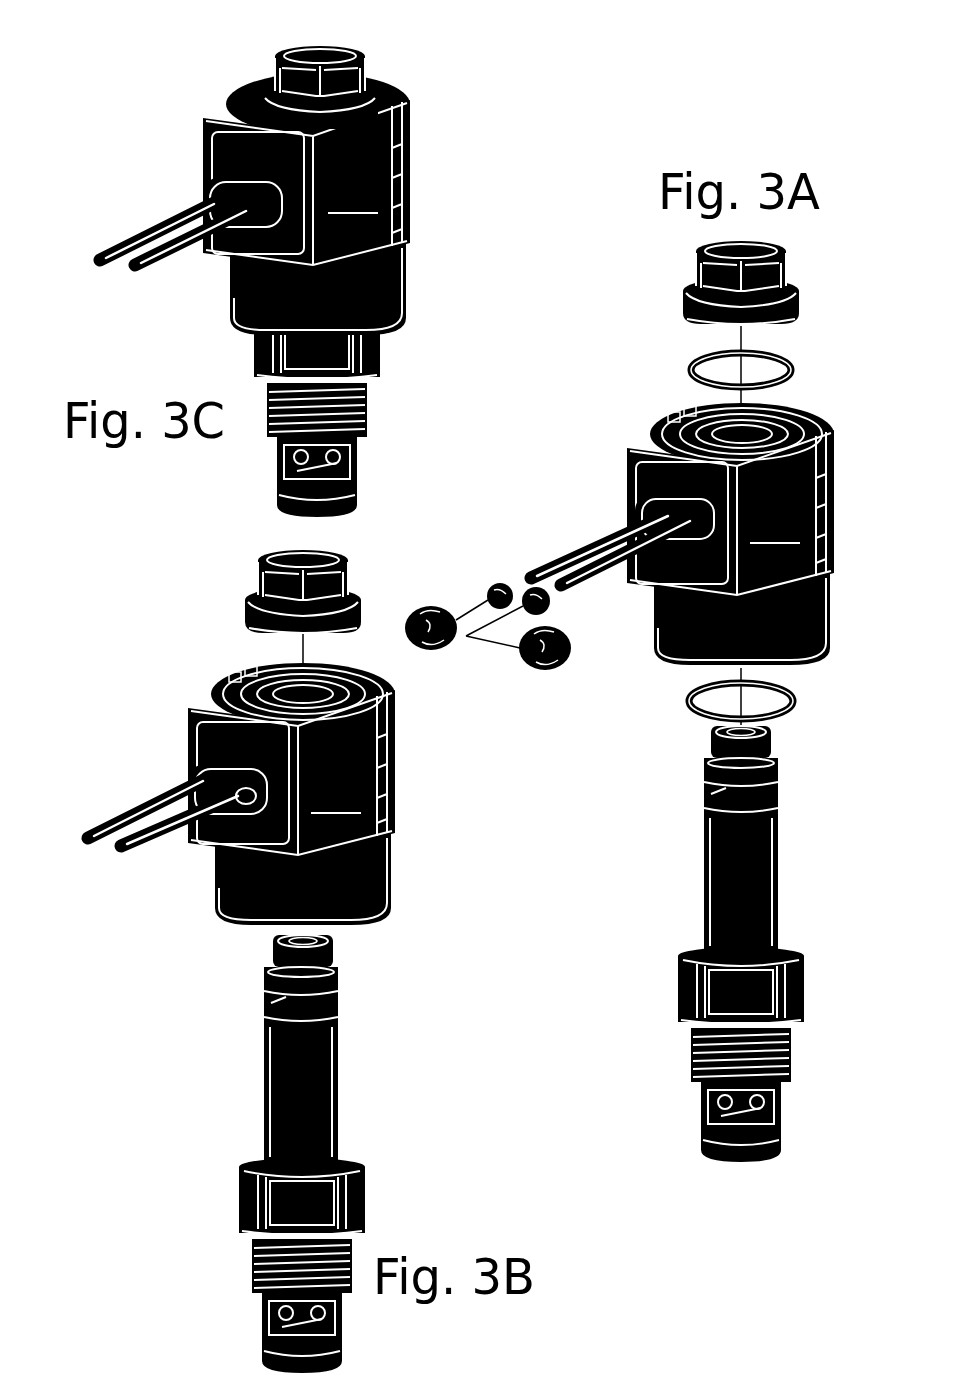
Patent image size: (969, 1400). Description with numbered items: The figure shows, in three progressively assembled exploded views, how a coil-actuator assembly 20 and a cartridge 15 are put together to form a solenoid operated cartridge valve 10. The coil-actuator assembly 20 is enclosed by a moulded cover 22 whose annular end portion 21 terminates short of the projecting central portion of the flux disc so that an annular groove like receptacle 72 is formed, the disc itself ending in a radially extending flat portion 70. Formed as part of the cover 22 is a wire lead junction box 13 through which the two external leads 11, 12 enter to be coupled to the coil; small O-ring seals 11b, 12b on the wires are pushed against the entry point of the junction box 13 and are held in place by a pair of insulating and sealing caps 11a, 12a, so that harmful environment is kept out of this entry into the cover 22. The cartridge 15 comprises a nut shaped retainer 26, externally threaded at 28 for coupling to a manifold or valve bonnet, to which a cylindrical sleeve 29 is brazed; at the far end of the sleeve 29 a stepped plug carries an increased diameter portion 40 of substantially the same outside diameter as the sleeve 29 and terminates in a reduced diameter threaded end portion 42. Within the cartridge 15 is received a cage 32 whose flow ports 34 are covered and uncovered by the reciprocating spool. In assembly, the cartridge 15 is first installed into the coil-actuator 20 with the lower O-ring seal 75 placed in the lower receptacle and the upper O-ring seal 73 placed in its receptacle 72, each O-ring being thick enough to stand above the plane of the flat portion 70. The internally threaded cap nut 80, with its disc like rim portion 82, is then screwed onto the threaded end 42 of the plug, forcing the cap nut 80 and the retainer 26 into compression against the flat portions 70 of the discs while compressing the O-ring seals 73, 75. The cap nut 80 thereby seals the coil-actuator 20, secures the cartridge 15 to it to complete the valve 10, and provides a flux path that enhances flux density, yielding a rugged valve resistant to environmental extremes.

In FIG. 3C, the solenoid operated cartridge valve 10 is at (370, 40).
In FIG. 3C, the external lead 11 is at (166, 262).
In FIG. 3B, the external lead 11 is at (142, 850).
In FIG. 3A, the external lead 11 is at (618, 572).
In FIG. 3B, the insulating and sealing cap 11a is at (243, 790).
In FIG. 3A, the insulating and sealing cap 11a is at (540, 665).
In FIG. 3A, the small O-ring seal 11b is at (542, 603).
In FIG. 3C, the external lead 12 is at (150, 212).
In FIG. 3B, the external lead 12 is at (112, 806).
In FIG. 3A, the external lead 12 is at (588, 533).
In FIG. 3B, the insulating and sealing cap 12a is at (185, 770).
In FIG. 3A, the insulating and sealing cap 12a is at (417, 645).
In FIG. 3A, the small O-ring seal 12b is at (482, 576).
In FIG. 3C, the wire lead junction box 13 is at (325, 206).
In FIG. 3B, the wire lead junction box 13 is at (302, 807).
In FIG. 3A, the wire lead junction box 13 is at (750, 520).
In FIG. 3C, the cartridge 15 is at (375, 429).
In FIG. 3B, the cartridge 15 is at (376, 1156).
In FIG. 3A, the cartridge 15 is at (808, 943).
In FIG. 3C, the coil-actuator assembly 20 is at (405, 112).
In FIG. 3B, the coil-actuator assembly 20 is at (402, 876).
In FIG. 3A, the coil-actuator assembly 20 is at (710, 483).
In FIG. 3B, the annular end portion 21 is at (210, 688).
In FIG. 3A, the annular end portion 21 is at (660, 420).
In FIG. 3C, the coil-actuator cover 22 is at (358, 183).
In FIG. 3B, the coil-actuator cover 22 is at (340, 759).
In FIG. 3A, the coil-actuator cover 22 is at (782, 501).
In FIG. 3C, the nut shaped retainer 26 is at (255, 350).
In FIG. 3B, the nut shaped retainer 26 is at (340, 1205).
In FIG. 3A, the nut shaped retainer 26 is at (780, 992).
In FIG. 3C, the external threads 28 is at (370, 398).
In FIG. 3B, the external threads 28 is at (245, 1256).
In FIG. 3A, the external threads 28 is at (680, 1049).
In FIG. 3B, the cylindrical sleeve 29 is at (271, 1064).
In FIG. 3A, the cylindrical sleeve 29 is at (720, 854).
In FIG. 3C, the cage or sleeve 32 is at (275, 465).
In FIG. 3B, the cage or sleeve 32 is at (332, 1327).
In FIG. 3A, the cage or sleeve 32 is at (765, 1120).
In FIG. 3C, the flow ports 34 is at (330, 455).
In FIG. 3B, the flow ports 34 is at (305, 1312).
In FIG. 3A, the flow ports 34 is at (745, 1098).
In FIG. 3B, the increased diameter portion 40 is at (276, 992).
In FIG. 3A, the increased diameter portion 40 is at (715, 780).
In FIG. 3B, the threaded end portion 42 is at (326, 943).
In FIG. 3A, the threaded end portion 42 is at (765, 736).
In FIG. 3B, the radially extending flat portion 70 is at (262, 688).
In FIG. 3A, the radially extending flat portion 70 is at (690, 422).
In FIG. 3A, the groove like receptacle 72 is at (683, 415).
In FIG. 3B, the upper O-ring seal 73 is at (225, 683).
In FIG. 3A, the upper O-ring seal 73 is at (782, 368).
In FIG. 3A, the lower O-ring seal 75 is at (775, 700).
In FIG. 3C, the cap nut 80 is at (266, 73).
In FIG. 3B, the cap nut 80 is at (251, 572).
In FIG. 3A, the cap nut 80 is at (734, 282).
In FIG. 3C, the disc like rim portion 82 is at (290, 70).
In FIG. 3B, the disc like rim portion 82 is at (240, 582).
In FIG. 3A, the disc like rim portion 82 is at (678, 280).